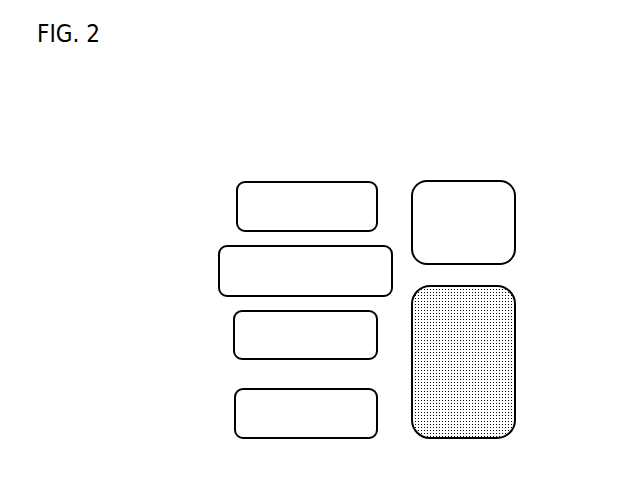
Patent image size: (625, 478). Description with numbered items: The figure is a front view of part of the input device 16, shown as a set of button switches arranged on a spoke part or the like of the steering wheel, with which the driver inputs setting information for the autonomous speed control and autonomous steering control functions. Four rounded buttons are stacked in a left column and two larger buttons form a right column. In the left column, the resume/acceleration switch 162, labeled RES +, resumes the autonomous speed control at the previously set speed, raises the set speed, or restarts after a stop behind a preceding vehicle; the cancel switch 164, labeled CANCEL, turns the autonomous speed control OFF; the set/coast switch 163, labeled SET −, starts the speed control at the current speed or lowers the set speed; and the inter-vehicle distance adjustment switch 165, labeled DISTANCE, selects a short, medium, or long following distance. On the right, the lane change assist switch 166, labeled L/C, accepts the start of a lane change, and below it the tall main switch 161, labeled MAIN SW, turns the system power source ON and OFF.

The input device 16 is at (526, 129).
The main switch 161 is at (507, 378).
The resume/acceleration switch 162 is at (244, 204).
The set/coast switch 163 is at (243, 340).
The cancel switch 164 is at (233, 276).
The inter-vehicle distance adjustment switch 165 is at (244, 416).
The lane change assist switch 166 is at (509, 227).